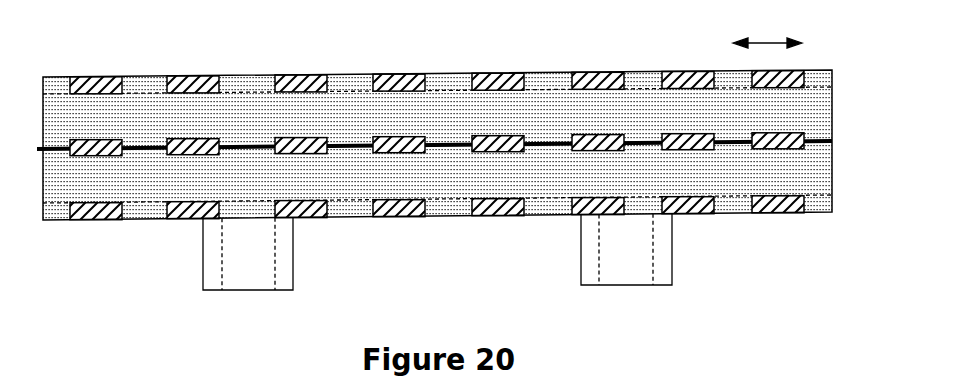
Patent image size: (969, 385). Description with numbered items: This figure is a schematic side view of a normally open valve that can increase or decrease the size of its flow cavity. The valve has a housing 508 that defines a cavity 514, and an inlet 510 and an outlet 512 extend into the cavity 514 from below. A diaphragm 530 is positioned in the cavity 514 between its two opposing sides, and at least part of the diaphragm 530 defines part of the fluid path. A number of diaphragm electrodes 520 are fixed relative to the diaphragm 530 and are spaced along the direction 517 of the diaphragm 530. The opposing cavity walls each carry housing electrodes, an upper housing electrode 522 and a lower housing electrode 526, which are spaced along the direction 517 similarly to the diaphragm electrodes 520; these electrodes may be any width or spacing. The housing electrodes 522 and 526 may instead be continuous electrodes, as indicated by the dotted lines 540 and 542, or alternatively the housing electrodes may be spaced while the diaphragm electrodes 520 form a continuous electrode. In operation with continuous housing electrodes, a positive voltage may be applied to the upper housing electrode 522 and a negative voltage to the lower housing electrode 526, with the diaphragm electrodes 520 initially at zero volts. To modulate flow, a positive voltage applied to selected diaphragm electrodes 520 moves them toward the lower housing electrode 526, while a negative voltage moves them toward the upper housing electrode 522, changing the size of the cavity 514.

The housing 508 is at (846, 164).
The inlet 510 is at (249, 254).
The outlet 512 is at (627, 258).
The cavity 514 is at (640, 183).
The direction along the diaphragm 517 is at (767, 30).
The diaphragm electrodes 520 is at (313, 150).
The upper housing electrode 522 is at (200, 78).
The lower housing electrode 526 is at (95, 220).
The diaphragm 530 is at (458, 138).
The dotted line 540 is at (262, 77).
The dotted line 542 is at (148, 220).